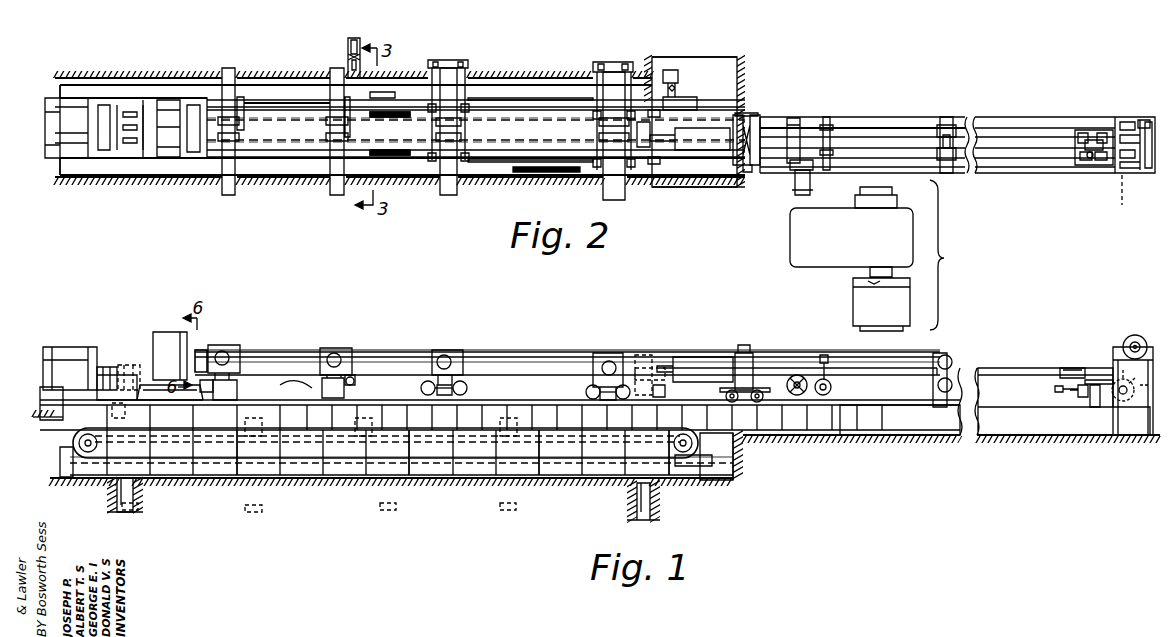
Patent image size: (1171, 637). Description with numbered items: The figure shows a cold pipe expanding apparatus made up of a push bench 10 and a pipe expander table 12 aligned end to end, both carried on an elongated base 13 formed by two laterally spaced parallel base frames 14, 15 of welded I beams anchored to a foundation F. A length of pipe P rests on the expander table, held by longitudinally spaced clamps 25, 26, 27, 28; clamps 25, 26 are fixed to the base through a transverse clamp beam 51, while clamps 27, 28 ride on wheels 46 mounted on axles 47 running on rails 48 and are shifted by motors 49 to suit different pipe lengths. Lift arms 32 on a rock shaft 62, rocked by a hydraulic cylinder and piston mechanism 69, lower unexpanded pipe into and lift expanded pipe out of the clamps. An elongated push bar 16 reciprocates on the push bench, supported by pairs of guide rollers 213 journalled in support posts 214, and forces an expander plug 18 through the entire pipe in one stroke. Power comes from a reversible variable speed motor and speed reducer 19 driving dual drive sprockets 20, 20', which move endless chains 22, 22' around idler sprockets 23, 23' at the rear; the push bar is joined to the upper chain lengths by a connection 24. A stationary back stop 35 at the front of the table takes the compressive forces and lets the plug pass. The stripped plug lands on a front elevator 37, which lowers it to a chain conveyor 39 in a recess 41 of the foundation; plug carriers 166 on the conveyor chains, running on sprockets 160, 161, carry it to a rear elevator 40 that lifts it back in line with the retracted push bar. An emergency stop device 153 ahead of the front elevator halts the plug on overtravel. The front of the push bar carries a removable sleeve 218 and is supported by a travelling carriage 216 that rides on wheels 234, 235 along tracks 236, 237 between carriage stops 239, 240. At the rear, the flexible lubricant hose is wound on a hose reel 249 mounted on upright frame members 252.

In FIG. 2, the push bench 10 is at (825, 108).
In FIG. 1, the push bench 10 is at (1053, 438).
In FIG. 2, the pipe expander table 12 is at (528, 77).
In FIG. 1, the pipe expander table 12 is at (408, 348).
In FIG. 1, the elongated base 13 is at (742, 416).
In FIG. 2, the base frame 14 is at (385, 105).
In FIG. 2, the base frame 15 is at (350, 158).
In FIG. 1, the base frame 15 is at (903, 424).
In FIG. 2, the push bar 16 is at (905, 125).
In FIG. 1, the push bar 16 is at (860, 377).
In FIG. 2, the pipe expander plug 18 is at (645, 150).
In FIG. 1, the pipe expander plug 18 is at (112, 410).
In FIG. 2, the reversible variable speed motor and speed reducer 19 is at (881, 255).
In FIG. 2, the drive sprocket 20 is at (806, 113).
In FIG. 2, the drive sprocket 20' is at (785, 190).
In FIG. 2, the endless chain 22 is at (862, 113).
In FIG. 2, the endless chain 22' is at (823, 182).
In FIG. 1, the endless chain 22' is at (1085, 426).
In FIG. 2, the idler sprocket 23 is at (1129, 132).
In FIG. 2, the idler sprocket 23' is at (1122, 197).
In FIG. 1, the idler sprocket 23' is at (1132, 410).
In FIG. 2, the push bar connection 24 is at (1100, 130).
In FIG. 1, the push bar connection 24 is at (1072, 375).
In FIG. 2, the pipe clamp 25 is at (228, 68).
In FIG. 1, the pipe clamp 25 is at (226, 345).
In FIG. 2, the pipe clamp 26 is at (333, 78).
In FIG. 1, the pipe clamp 26 is at (338, 348).
In FIG. 2, the pipe clamp 27 is at (462, 82).
In FIG. 1, the pipe clamp 27 is at (446, 350).
In FIG. 2, the pipe clamp 28 is at (598, 100).
In FIG. 1, the pipe clamp 28 is at (608, 353).
In FIG. 2, the lift arm 32 is at (245, 130).
In FIG. 1, the lift arm 32 is at (240, 350).
In FIG. 2, the stationary back stop 35 is at (172, 152).
In FIG. 1, the stationary back stop 35 is at (165, 335).
In FIG. 2, the front elevator 37 is at (118, 118).
In FIG. 1, the front elevator 37 is at (132, 363).
In FIG. 1, the chain conveyor 39 is at (345, 478).
In FIG. 1, the rear elevator 40 is at (668, 396).
In FIG. 2, the recess 41 is at (695, 65).
In FIG. 1, the recess 41 is at (742, 442).
In FIG. 2, the wheel 46 is at (432, 162).
In FIG. 1, the wheel 46 is at (421, 388).
In FIG. 2, the axle 47 is at (435, 133).
In FIG. 2, the rail 48 is at (535, 105).
In FIG. 2, the motor 49 is at (450, 62).
In FIG. 1, the transverse clamp beam 51 is at (240, 382).
In FIG. 2, the rock shaft 62 is at (262, 105).
In FIG. 1, the rock shaft 62 is at (515, 352).
In FIG. 2, the hydraulic cylinder and piston mechanism 69 is at (353, 38).
In FIG. 1, the hydraulic cylinder and piston mechanism 69 is at (357, 377).
In FIG. 2, the emergency stop device 153 is at (75, 125).
In FIG. 1, the emergency stop device 153 is at (75, 348).
In FIG. 1, the sprocket 160 is at (70, 443).
In FIG. 1, the sprocket 161 is at (686, 466).
In FIG. 1, the plug carrier 166 is at (262, 480).
In FIG. 2, the guide roller 213 is at (843, 130).
In FIG. 1, the guide roller 213 is at (826, 379).
In FIG. 2, the support post 214 is at (945, 120).
In FIG. 1, the support post 214 is at (799, 375).
In FIG. 2, the travelling carriage 216 is at (795, 135).
In FIG. 1, the travelling carriage 216 is at (746, 357).
In FIG. 2, the sleeve 218 is at (683, 135).
In FIG. 1, the sleeve 218 is at (692, 367).
In FIG. 2, the carriage wheel 234 is at (750, 115).
In FIG. 2, the carriage wheel 235 is at (748, 173).
In FIG. 2, the track 236 is at (685, 83).
In FIG. 2, the track 237 is at (730, 165).
In FIG. 2, the carriage stop 239 is at (655, 58).
In FIG. 2, the carriage stop 240 is at (655, 165).
In FIG. 2, the hose reel 249 is at (1140, 116).
In FIG. 1, the hose reel 249 is at (1142, 336).
In FIG. 1, the upright frame member 252 is at (1113, 375).
In FIG. 2, the pipe P is at (286, 160).
In FIG. 1, the pipe P is at (290, 352).
In FIG. 2, the foundation F is at (114, 176).
In FIG. 1, the foundation F is at (446, 478).